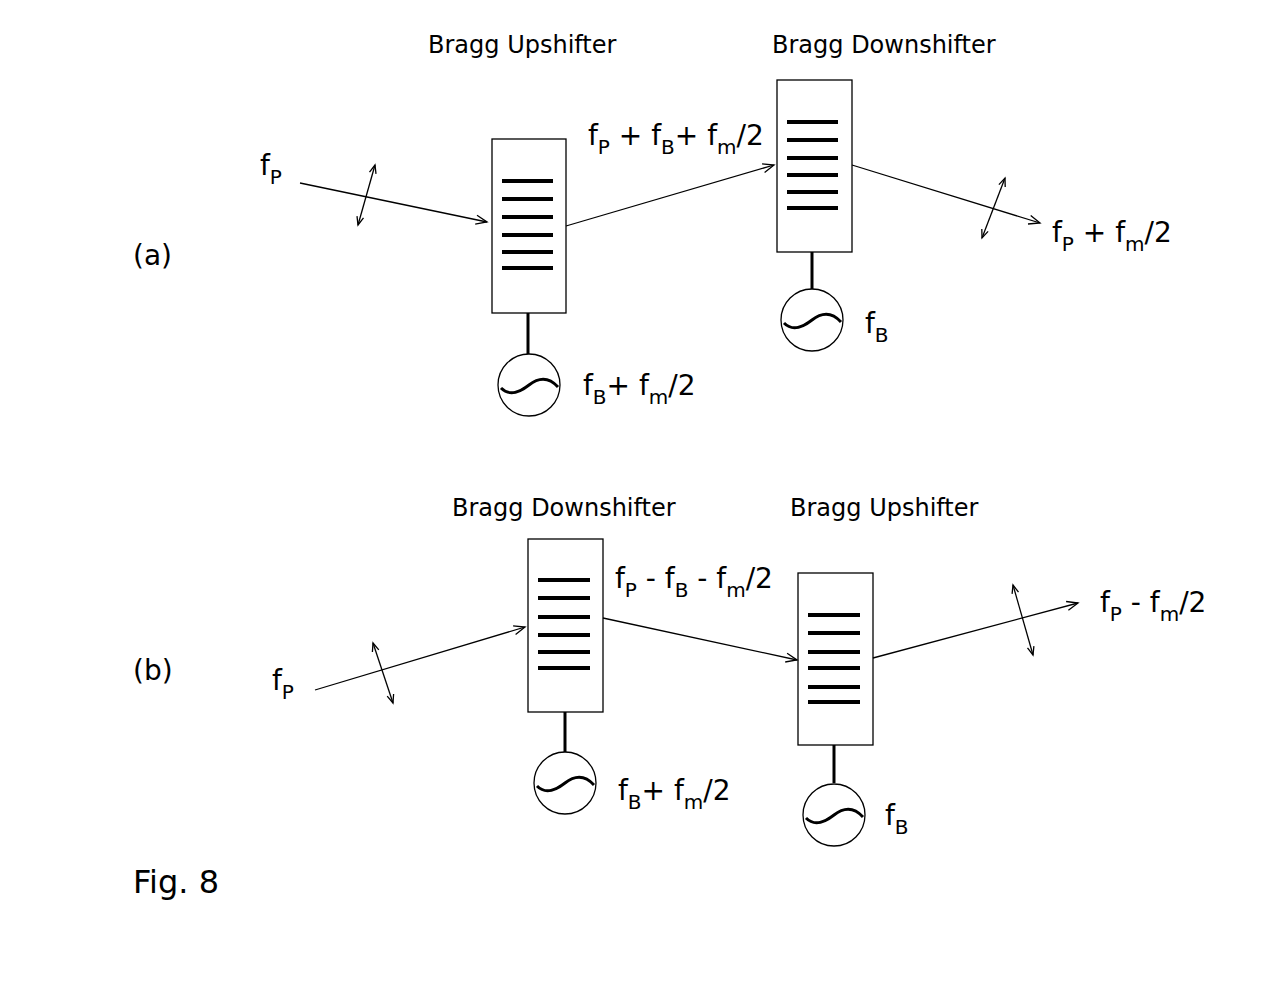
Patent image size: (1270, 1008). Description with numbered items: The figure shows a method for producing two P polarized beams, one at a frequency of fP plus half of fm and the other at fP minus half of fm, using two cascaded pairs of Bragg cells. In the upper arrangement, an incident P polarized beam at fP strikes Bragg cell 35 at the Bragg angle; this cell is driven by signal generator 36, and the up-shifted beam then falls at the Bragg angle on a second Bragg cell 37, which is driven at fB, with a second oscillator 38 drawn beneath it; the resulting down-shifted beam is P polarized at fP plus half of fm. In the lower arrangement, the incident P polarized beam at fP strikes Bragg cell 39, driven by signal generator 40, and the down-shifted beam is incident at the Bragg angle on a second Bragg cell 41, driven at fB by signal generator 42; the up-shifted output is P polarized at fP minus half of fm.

The Bragg cell 35 is at (478, 282).
The signal generator 36 is at (485, 387).
The second Bragg cell 37 is at (765, 223).
The RF oscillator driving downshifter at fB 38 is at (765, 315).
The Bragg cell 39 is at (515, 700).
The signal generator 40 is at (525, 792).
The second Bragg cell 41 is at (790, 725).
The signal generator 42 is at (785, 820).